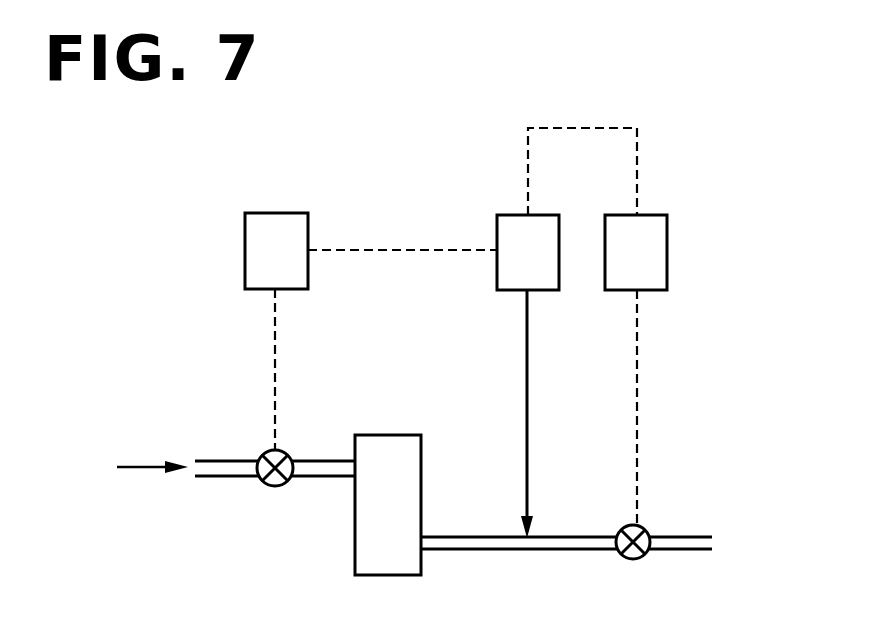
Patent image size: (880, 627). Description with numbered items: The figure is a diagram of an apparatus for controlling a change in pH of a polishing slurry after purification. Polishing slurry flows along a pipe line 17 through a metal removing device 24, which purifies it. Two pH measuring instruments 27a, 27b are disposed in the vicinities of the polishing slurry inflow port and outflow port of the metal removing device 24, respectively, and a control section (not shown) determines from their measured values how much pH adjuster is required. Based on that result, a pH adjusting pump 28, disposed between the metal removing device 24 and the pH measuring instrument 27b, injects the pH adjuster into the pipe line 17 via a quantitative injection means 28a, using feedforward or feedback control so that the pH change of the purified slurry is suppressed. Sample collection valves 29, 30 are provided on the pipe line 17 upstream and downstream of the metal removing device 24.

The pipe line 17 is at (233, 476).
The metal removing device 24 is at (421, 466).
The pH measuring instrument 27a is at (250, 258).
The pH measuring instrument 27b is at (667, 237).
The pH adjusting pump 28 is at (500, 232).
The quantitative injection means 28a is at (527, 415).
The sample collection valve 29 is at (270, 450).
The sample collection valve 30 is at (637, 527).